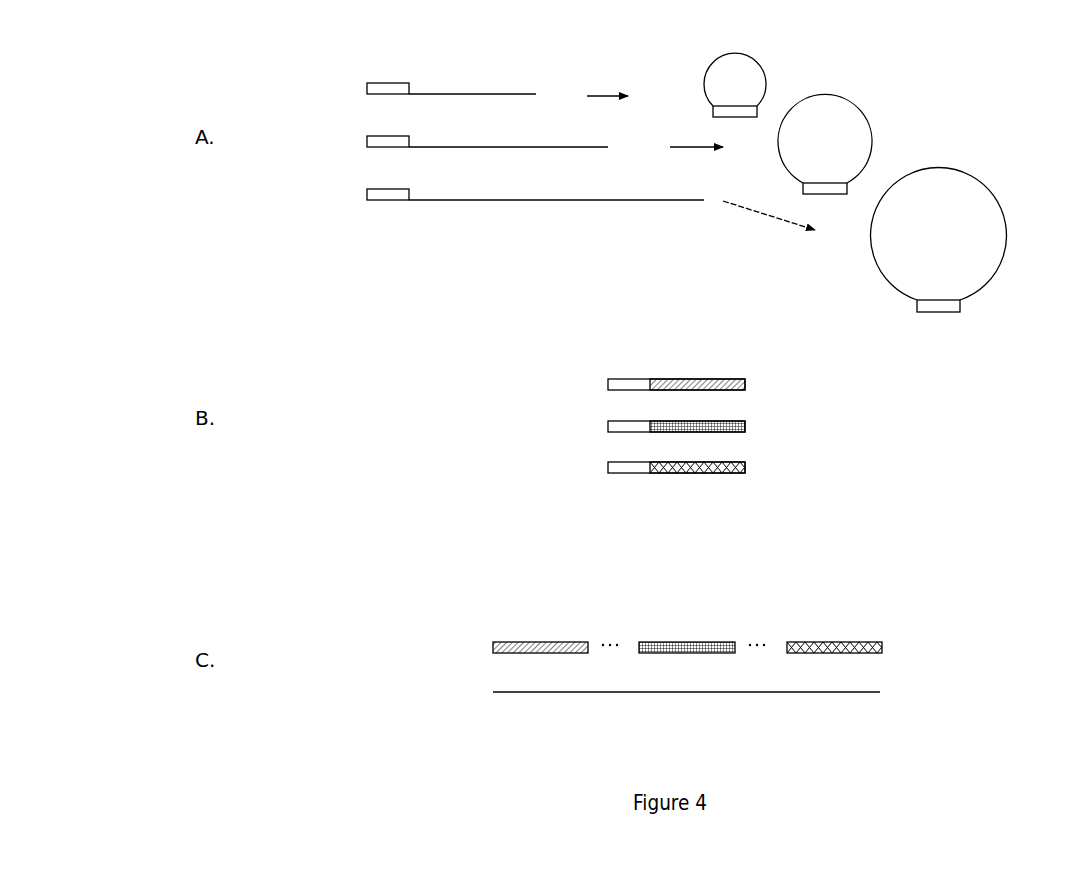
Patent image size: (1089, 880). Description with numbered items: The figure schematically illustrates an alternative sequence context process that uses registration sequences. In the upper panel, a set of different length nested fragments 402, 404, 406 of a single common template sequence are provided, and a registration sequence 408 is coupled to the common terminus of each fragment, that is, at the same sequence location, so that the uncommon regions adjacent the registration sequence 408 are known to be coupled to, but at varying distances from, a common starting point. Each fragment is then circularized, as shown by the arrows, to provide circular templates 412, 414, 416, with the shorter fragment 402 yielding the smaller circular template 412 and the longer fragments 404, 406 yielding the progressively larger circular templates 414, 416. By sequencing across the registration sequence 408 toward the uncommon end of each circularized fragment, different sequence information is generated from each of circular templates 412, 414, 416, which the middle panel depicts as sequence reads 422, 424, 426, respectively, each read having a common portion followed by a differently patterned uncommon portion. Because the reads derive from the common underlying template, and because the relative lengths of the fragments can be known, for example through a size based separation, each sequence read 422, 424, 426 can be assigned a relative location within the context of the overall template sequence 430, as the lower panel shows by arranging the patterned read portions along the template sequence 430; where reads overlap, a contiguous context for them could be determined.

The fragment 402 is at (451, 83).
The fragment 404 is at (487, 136).
The fragment 406 is at (535, 188).
The registration sequence 408 is at (377, 196).
The circular template 412 is at (765, 77).
The circular template 414 is at (870, 127).
The circular template 416 is at (1008, 212).
The sequence read 422 is at (646, 388).
The sequence read 424 is at (646, 428).
The sequence read 426 is at (646, 470).
The template sequence 430 is at (711, 673).